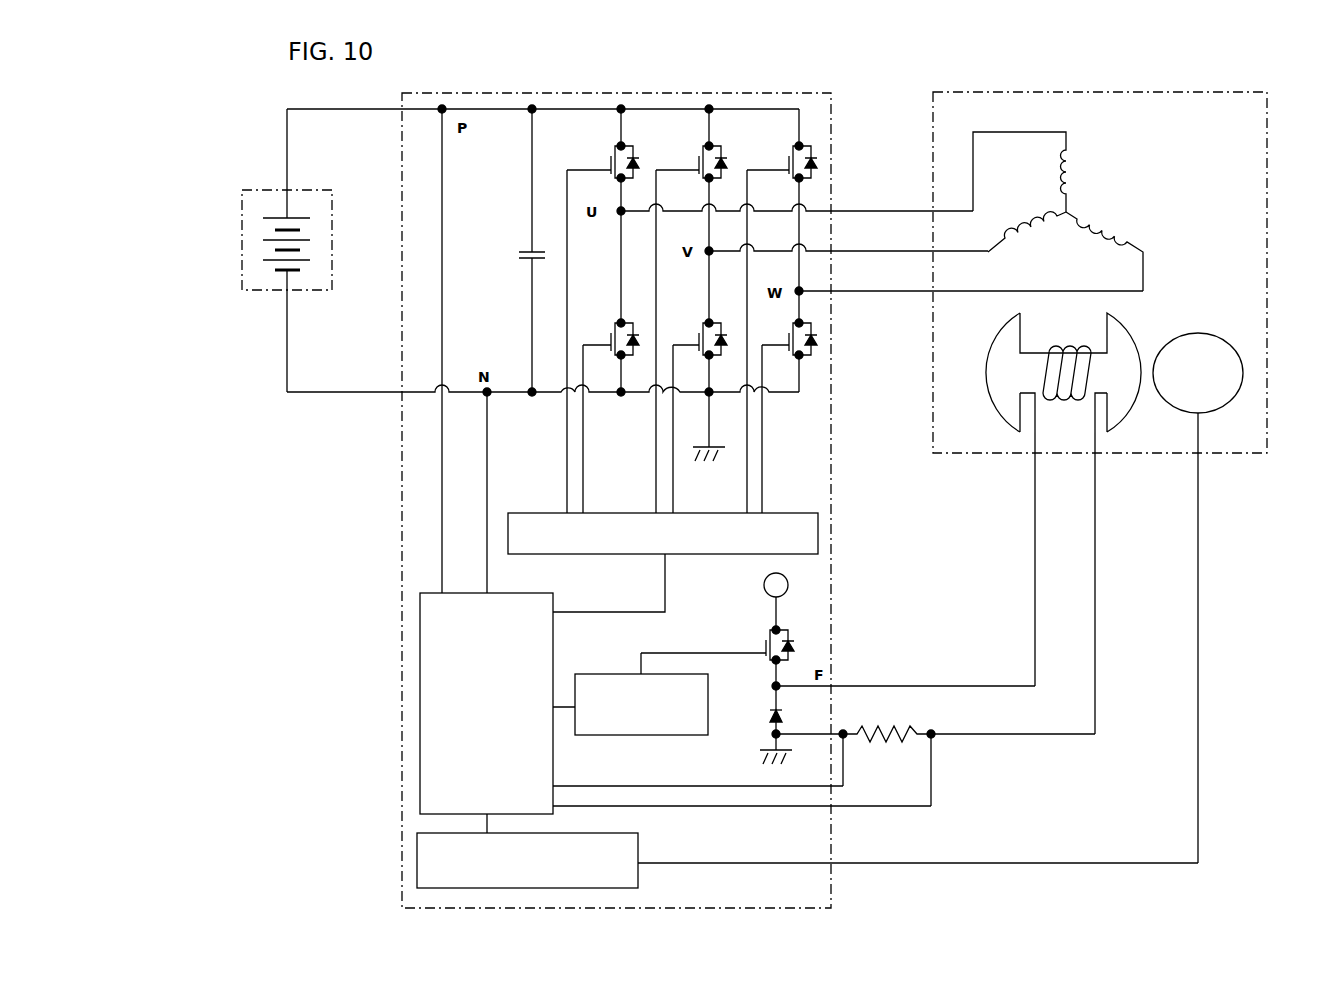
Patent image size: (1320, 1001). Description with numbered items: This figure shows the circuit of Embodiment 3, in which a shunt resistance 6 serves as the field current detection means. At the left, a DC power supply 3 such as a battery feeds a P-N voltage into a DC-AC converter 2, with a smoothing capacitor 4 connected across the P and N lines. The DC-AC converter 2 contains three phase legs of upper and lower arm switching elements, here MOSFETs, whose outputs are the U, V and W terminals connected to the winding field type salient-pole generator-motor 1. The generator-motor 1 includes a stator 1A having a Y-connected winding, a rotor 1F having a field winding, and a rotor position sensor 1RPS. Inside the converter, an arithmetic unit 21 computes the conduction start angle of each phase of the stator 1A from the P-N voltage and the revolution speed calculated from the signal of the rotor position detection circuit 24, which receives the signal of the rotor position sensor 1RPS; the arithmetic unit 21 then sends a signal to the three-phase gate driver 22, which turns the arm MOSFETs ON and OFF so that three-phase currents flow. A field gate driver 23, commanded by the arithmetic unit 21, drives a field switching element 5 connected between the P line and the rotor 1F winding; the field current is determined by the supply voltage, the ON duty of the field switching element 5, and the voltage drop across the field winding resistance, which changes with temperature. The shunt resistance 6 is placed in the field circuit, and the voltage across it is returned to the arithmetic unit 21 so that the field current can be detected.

The winding field type salient-pole generator-motor 1 is at (1267, 127).
The stator 1A is at (1097, 216).
The rotor 1F is at (1118, 337).
The rotor position sensor 1RPS is at (1216, 334).
The DC-AC converter 2 is at (831, 133).
The DC power supply 3 is at (332, 236).
The smoothing capacitor 4 is at (527, 253).
The field switching element 5 is at (766, 632).
The shunt resistance 6 is at (882, 745).
The arithmetic unit 21 is at (553, 602).
The three-phase gate driver 22 is at (818, 522).
The field gate driver 23 is at (708, 702).
The rotor position detection circuit 24 is at (638, 850).